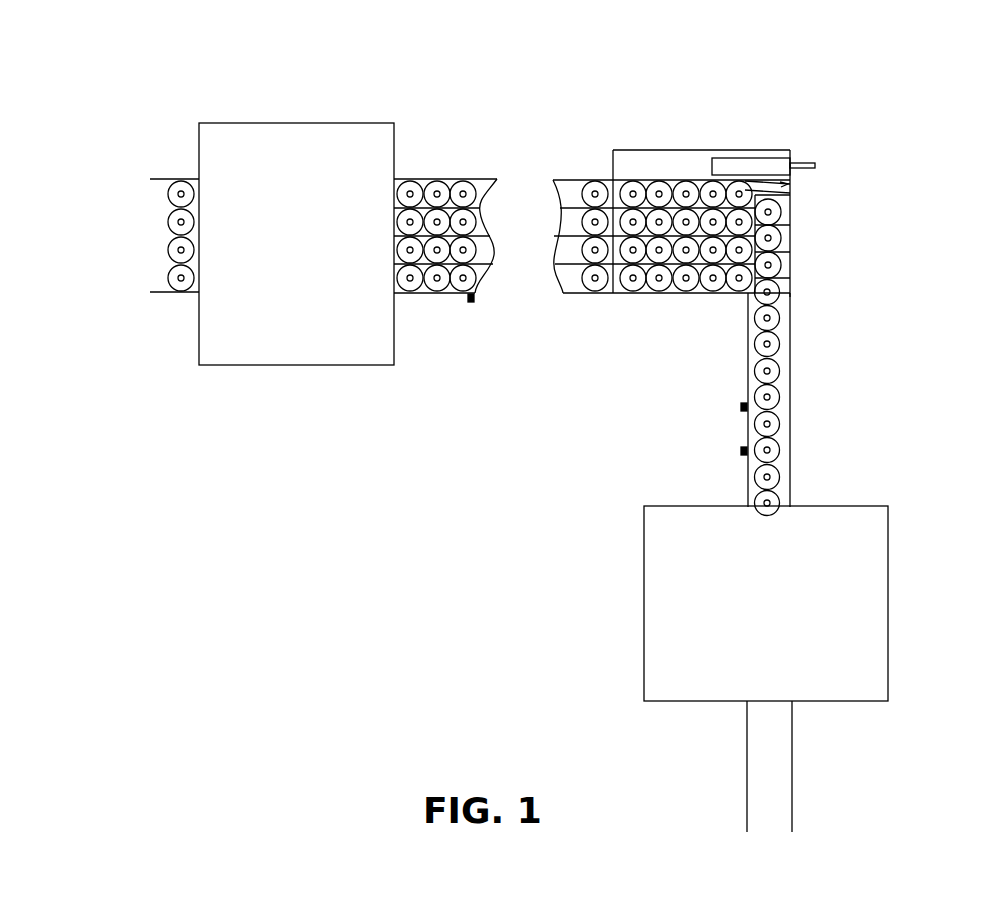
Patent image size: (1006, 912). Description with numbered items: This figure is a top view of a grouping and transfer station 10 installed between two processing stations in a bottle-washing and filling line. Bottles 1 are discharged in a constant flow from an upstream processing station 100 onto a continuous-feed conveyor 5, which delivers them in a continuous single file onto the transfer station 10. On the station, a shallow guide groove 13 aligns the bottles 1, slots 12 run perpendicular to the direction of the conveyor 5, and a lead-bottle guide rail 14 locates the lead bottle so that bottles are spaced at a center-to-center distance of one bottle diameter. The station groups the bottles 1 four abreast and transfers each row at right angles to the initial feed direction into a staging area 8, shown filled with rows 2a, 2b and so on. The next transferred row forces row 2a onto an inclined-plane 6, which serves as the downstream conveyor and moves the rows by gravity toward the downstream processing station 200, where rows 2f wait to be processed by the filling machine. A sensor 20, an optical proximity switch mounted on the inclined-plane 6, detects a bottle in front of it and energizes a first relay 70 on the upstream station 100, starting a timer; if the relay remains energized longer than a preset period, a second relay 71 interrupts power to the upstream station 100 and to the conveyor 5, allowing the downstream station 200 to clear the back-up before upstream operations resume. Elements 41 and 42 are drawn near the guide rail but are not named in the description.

The downstream processing station 200 is at (266, 121).
The inclined-plane 6 is at (425, 294).
The rows 2f is at (583, 178).
The sensor 20 is at (472, 303).
The staging area 8 is at (619, 294).
The row 2a is at (633, 181).
The row 2b is at (660, 181).
The pusher 42 is at (763, 157).
The transfer member 41 is at (812, 163).
The lead-bottle guide rail 14 is at (790, 178).
The slots 12 is at (792, 242).
The guide groove 13 is at (790, 294).
The continuous-feed conveyor 5 is at (785, 401).
The bottles 1 is at (772, 344).
The first relay 70 is at (741, 407).
The second relay 71 is at (741, 451).
The upstream processing station 100 is at (888, 603).
The grouping and transfer station 10 is at (830, 102).